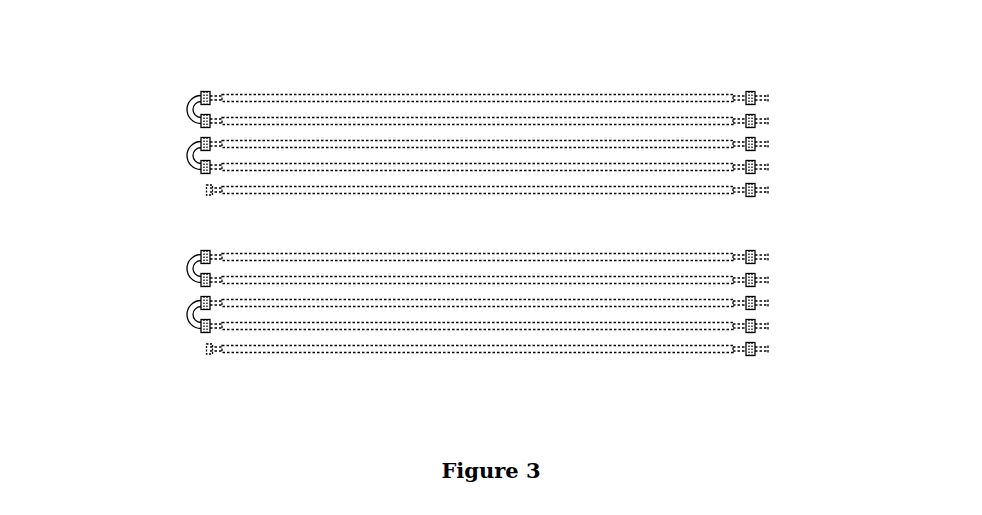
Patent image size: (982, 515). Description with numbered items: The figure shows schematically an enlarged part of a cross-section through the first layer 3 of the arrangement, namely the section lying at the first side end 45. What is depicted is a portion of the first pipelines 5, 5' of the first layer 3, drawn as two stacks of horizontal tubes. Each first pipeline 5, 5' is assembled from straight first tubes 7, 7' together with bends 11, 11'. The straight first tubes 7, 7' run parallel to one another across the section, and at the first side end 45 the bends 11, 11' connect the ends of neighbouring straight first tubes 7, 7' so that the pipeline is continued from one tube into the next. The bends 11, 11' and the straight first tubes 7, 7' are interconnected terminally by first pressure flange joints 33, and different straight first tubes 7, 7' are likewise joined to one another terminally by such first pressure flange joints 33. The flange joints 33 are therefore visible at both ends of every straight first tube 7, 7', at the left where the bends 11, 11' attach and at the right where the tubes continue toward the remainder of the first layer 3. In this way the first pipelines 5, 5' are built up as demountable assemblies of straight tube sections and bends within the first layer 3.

The first layer 3 is at (697, 63).
The first pipeline 5 is at (489, 354).
The first pipeline 5' is at (488, 101).
The straight first tube 7 is at (488, 334).
The straight first tube 7' is at (489, 98).
The bend 11 is at (146, 292).
The bend 11' is at (126, 133).
The first pressure flange joint 33 is at (205, 92).
The first side end 45 is at (157, 206).